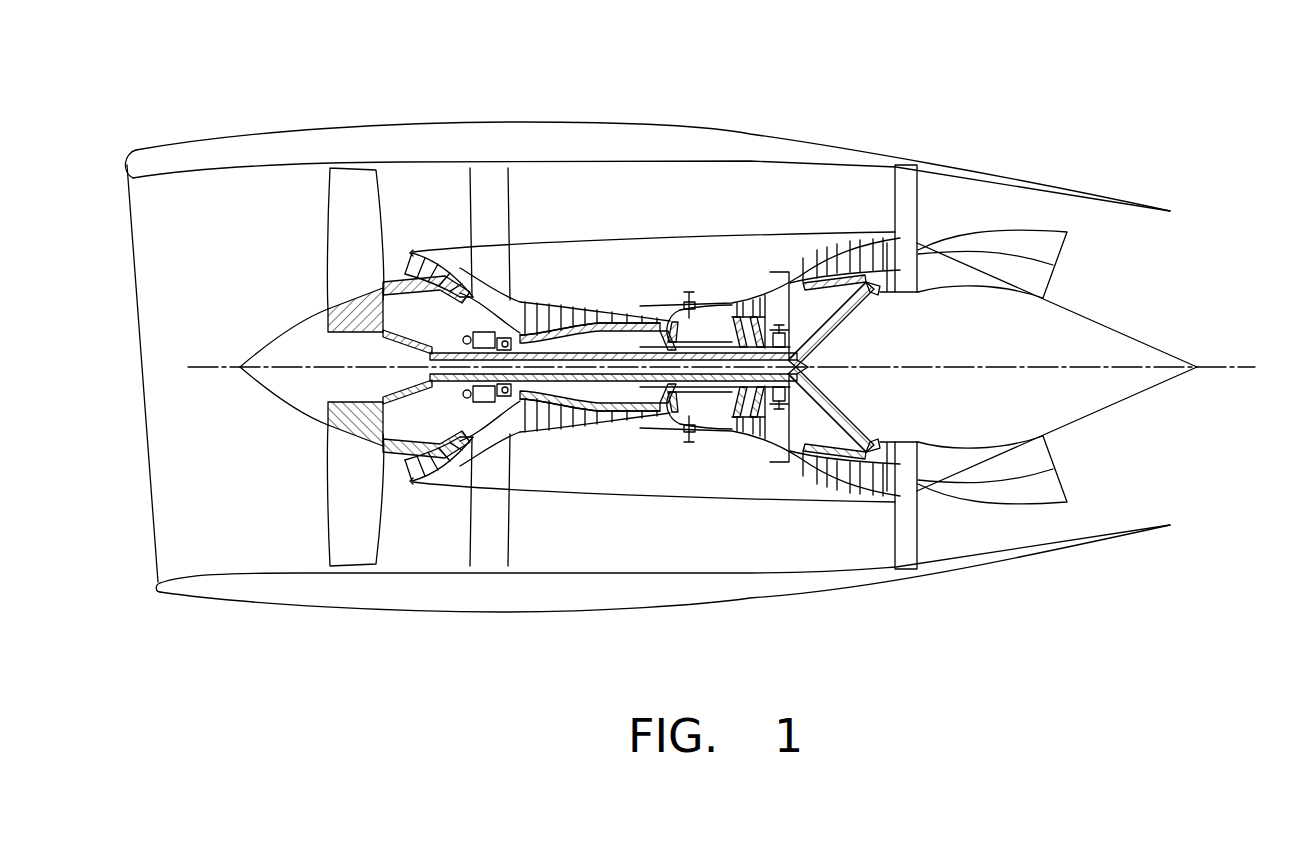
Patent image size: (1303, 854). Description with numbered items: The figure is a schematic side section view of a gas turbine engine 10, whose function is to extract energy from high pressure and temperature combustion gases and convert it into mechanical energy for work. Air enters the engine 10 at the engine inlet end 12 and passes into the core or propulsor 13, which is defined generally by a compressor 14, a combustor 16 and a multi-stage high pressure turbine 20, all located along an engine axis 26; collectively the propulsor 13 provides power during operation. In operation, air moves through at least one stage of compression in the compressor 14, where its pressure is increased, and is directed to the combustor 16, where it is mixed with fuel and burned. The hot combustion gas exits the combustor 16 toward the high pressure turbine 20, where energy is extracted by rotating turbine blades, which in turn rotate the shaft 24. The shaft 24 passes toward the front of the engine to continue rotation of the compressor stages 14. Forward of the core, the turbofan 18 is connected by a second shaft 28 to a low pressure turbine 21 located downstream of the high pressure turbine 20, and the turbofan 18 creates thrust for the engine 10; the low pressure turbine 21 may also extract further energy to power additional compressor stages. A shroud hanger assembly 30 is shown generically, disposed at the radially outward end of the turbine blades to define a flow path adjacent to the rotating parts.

The gas turbine engine 10 is at (938, 100).
The engine inlet end 12 is at (144, 211).
The core or propulsor 13 is at (650, 218).
The compressor 14 is at (556, 296).
The combustor 16 is at (708, 288).
The turbofan 18 is at (296, 225).
The multi-stage high pressure turbine 20 is at (752, 288).
The low pressure turbine 21 is at (875, 296).
The shaft 24 is at (683, 412).
The engine axis 26 is at (1253, 367).
The shaft 28 is at (616, 413).
The shroud hanger assembly 30 is at (737, 293).